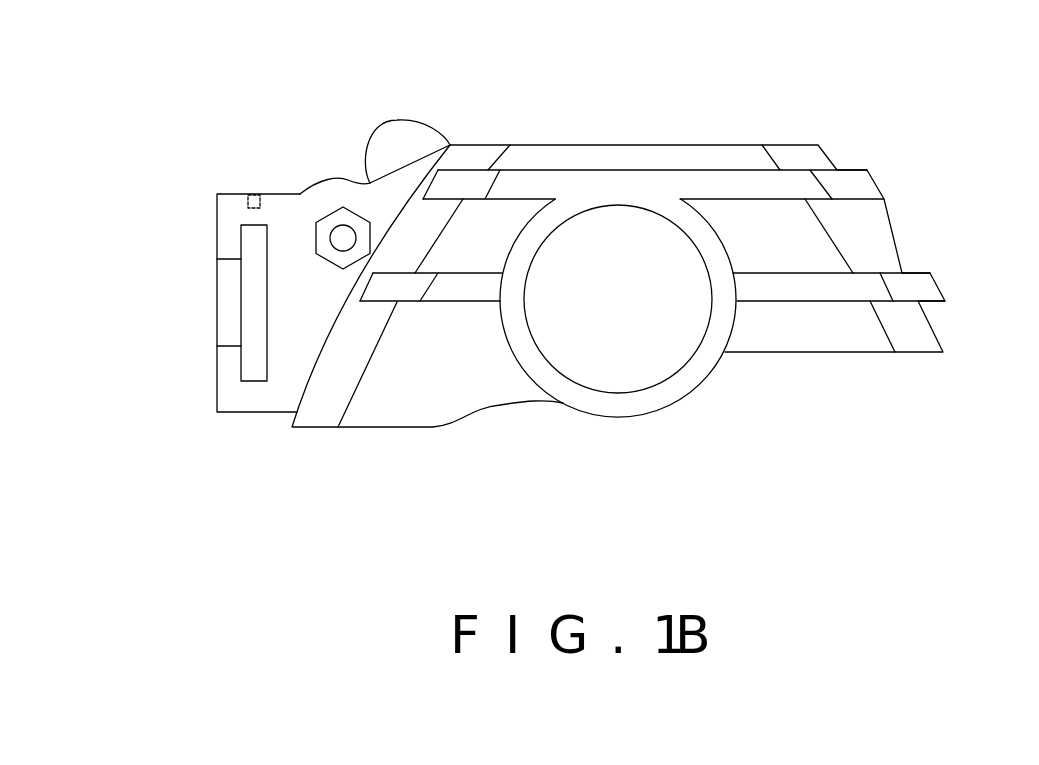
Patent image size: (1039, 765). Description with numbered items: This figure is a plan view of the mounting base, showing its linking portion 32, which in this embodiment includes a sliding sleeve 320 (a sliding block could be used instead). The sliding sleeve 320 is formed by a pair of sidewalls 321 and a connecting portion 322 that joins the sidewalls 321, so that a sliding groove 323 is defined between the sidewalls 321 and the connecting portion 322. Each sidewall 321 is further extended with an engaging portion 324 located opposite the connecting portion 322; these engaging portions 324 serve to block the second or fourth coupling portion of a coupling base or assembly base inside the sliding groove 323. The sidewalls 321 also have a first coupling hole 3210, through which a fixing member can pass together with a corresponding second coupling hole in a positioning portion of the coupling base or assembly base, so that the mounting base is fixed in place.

The linking portion 32 is at (138, 161).
The sliding sleeve 320 is at (263, 425).
The sidewalls 321 is at (243, 217).
The connecting portion 322 is at (278, 260).
The sliding groove 323 is at (258, 240).
The engaging portion 324 is at (228, 247).
The first coupling hole 3210 is at (252, 187).